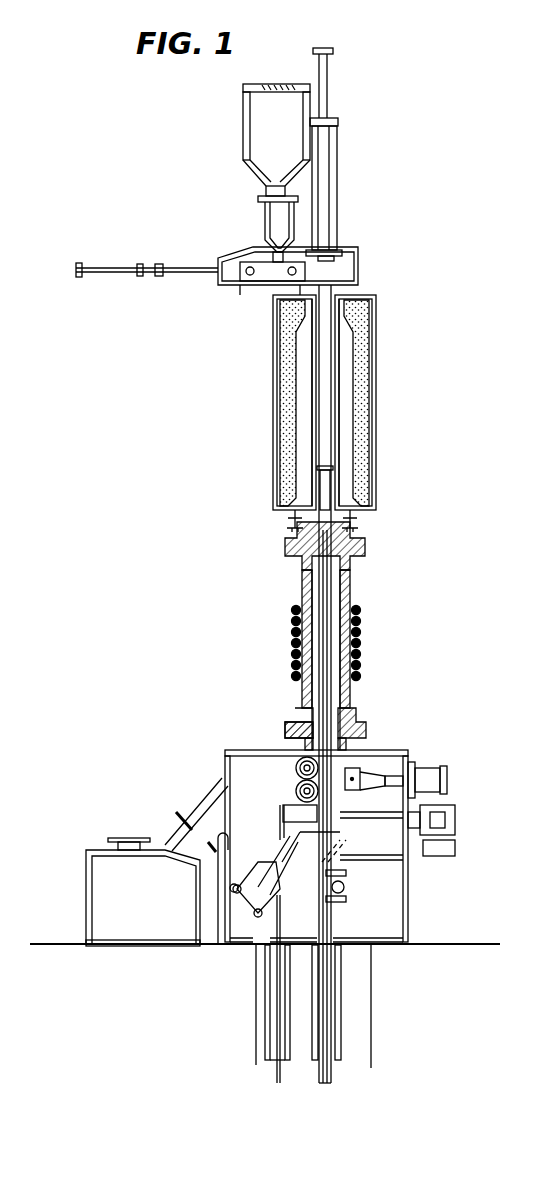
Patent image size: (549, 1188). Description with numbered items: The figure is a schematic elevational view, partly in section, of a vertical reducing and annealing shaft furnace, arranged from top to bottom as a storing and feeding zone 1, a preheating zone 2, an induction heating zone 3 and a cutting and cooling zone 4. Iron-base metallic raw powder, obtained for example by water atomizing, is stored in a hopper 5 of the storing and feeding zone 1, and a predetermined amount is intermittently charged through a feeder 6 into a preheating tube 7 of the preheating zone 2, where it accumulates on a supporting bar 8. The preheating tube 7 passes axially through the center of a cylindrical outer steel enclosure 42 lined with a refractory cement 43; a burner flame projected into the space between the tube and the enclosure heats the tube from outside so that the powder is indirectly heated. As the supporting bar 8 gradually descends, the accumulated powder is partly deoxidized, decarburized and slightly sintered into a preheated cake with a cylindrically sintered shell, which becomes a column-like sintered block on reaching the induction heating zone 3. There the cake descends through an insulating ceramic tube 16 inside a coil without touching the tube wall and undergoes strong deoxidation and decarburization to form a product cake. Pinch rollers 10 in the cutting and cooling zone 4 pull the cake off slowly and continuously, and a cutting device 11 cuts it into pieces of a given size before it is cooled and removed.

The storing and feeding zone 1 is at (347, 203).
The preheating zone 2 is at (381, 410).
The induction heating zone 3 is at (400, 639).
The cutting and cooling zone 4 is at (426, 752).
The hopper 5 is at (258, 218).
The feeder 6 is at (262, 278).
The preheating tube 7 is at (314, 376).
The supporting bar 8 is at (316, 582).
The pinch rollers 10 is at (296, 792).
The cutting device 11 is at (362, 832).
The insulating ceramic tube 16 is at (312, 690).
The cylindrical outer steel enclosure 42 is at (375, 438).
The refractory cement 43 is at (374, 470).